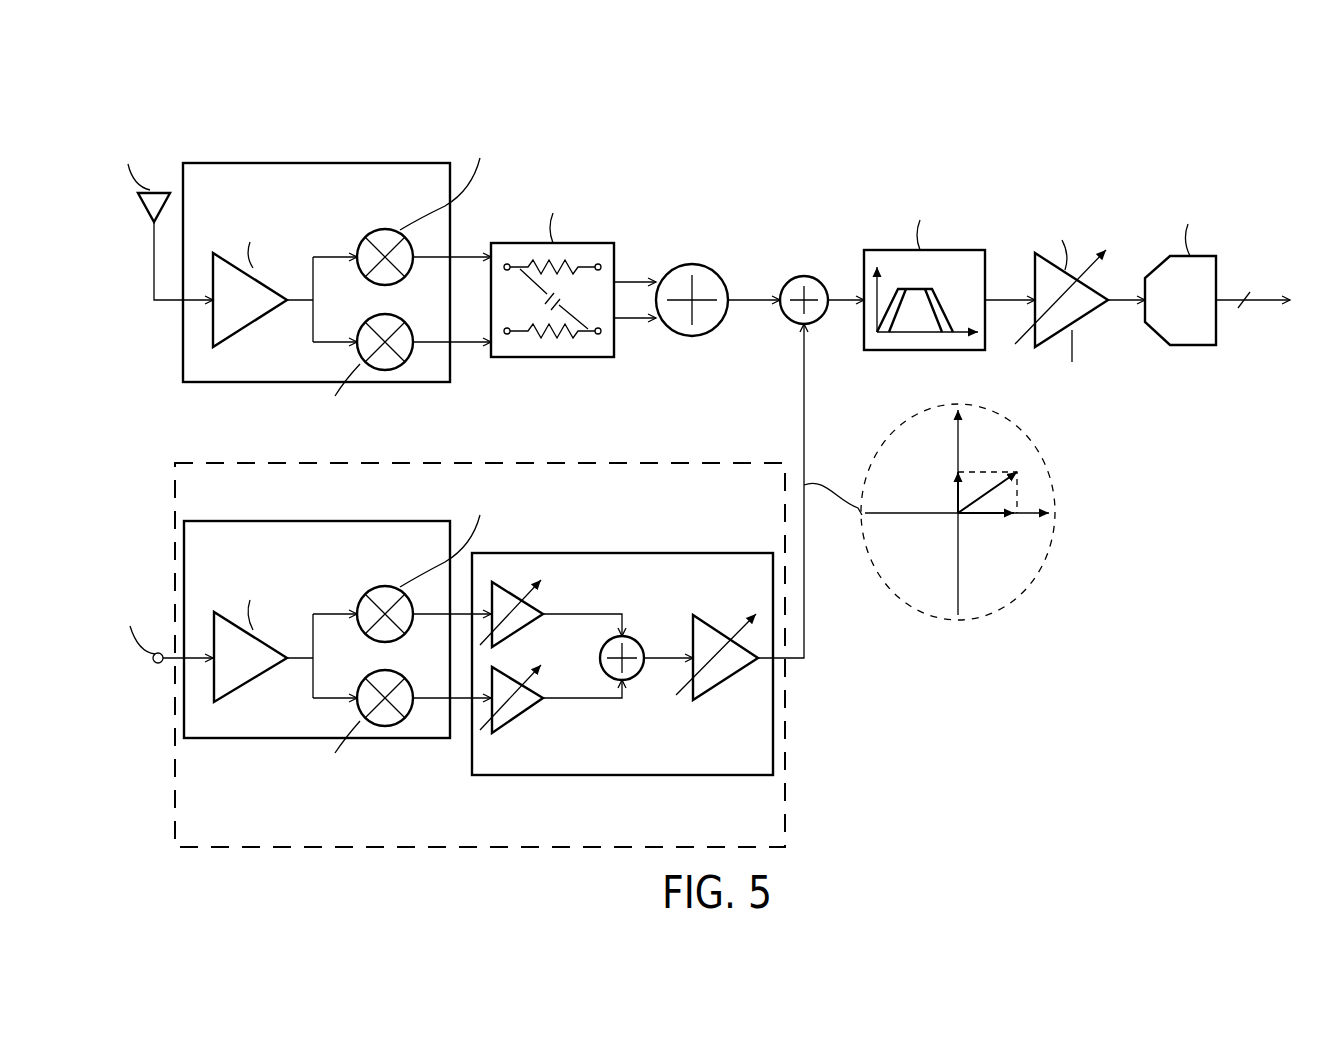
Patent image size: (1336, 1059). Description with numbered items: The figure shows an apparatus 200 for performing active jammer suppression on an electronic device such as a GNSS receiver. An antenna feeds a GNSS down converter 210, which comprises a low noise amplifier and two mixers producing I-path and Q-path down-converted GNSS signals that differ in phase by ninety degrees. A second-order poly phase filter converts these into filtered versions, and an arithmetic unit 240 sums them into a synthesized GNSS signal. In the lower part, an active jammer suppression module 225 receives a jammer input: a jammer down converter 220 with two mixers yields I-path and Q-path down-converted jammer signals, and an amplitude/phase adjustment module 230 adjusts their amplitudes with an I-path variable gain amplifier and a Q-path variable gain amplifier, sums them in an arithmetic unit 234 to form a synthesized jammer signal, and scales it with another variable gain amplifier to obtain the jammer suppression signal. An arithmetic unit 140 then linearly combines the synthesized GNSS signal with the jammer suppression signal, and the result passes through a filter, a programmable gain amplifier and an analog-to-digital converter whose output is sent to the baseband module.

The apparatus 200 is at (1148, 102).
The GNSS down converter 210 is at (318, 163).
The jammer down converter 220 is at (318, 521).
The active jammer suppression module 225 is at (785, 770).
The amplitude/phase adjustment module 230 is at (636, 553).
The arithmetic unit 234 is at (640, 640).
The arithmetic unit 240 is at (694, 264).
The arithmetic unit 140 is at (806, 276).